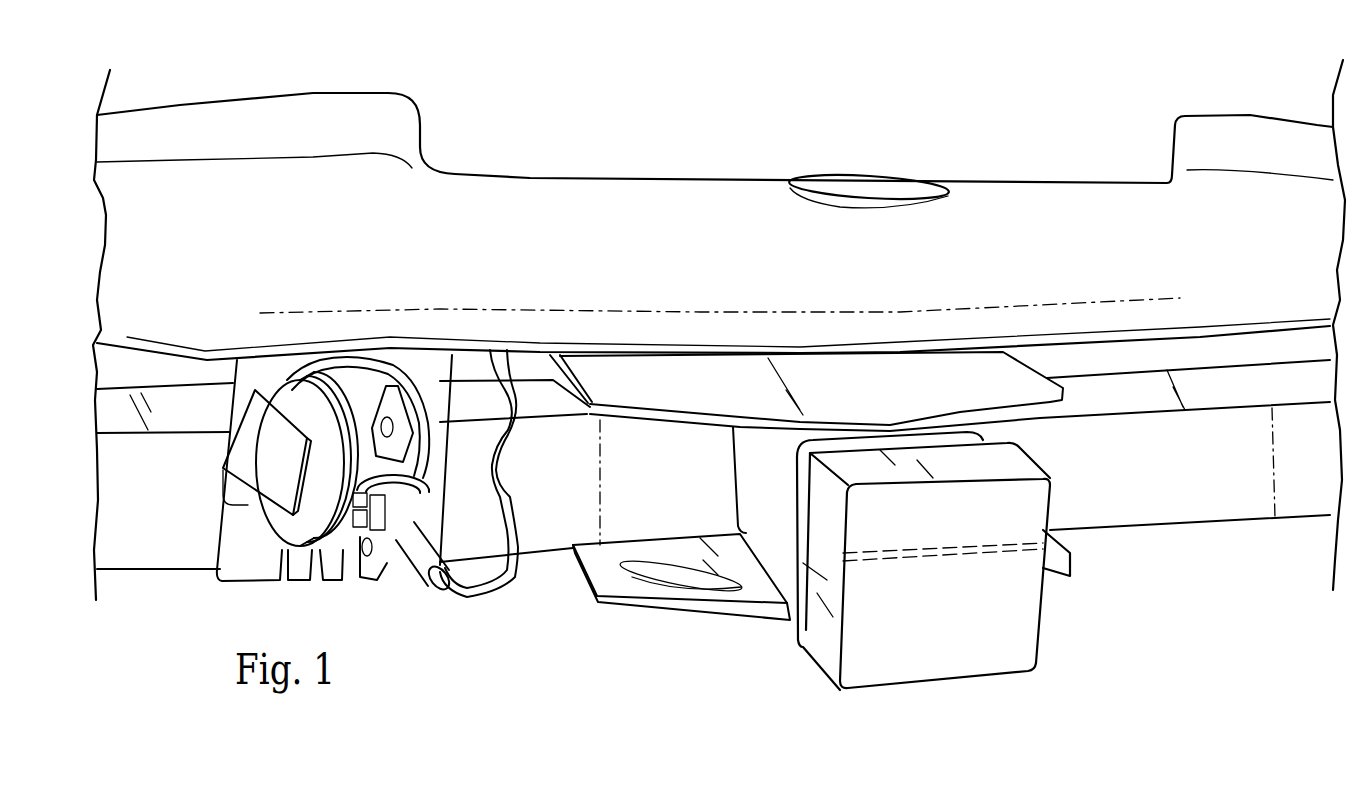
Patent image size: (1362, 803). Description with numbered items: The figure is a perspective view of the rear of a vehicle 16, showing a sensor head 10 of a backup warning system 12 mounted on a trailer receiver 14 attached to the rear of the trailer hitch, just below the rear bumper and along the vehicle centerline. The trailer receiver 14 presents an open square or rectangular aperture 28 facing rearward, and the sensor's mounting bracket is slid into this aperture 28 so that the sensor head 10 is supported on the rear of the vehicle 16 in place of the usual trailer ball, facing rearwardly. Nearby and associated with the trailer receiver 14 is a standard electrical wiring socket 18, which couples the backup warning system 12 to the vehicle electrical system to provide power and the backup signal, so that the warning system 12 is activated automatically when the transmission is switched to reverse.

The sensor head 10 is at (945, 648).
The backup warning system 12 is at (646, 629).
The trailer receiver 14 is at (768, 432).
The vehicle 16 is at (536, 253).
The electrical wiring socket 18 is at (368, 594).
The aperture 28 is at (890, 430).